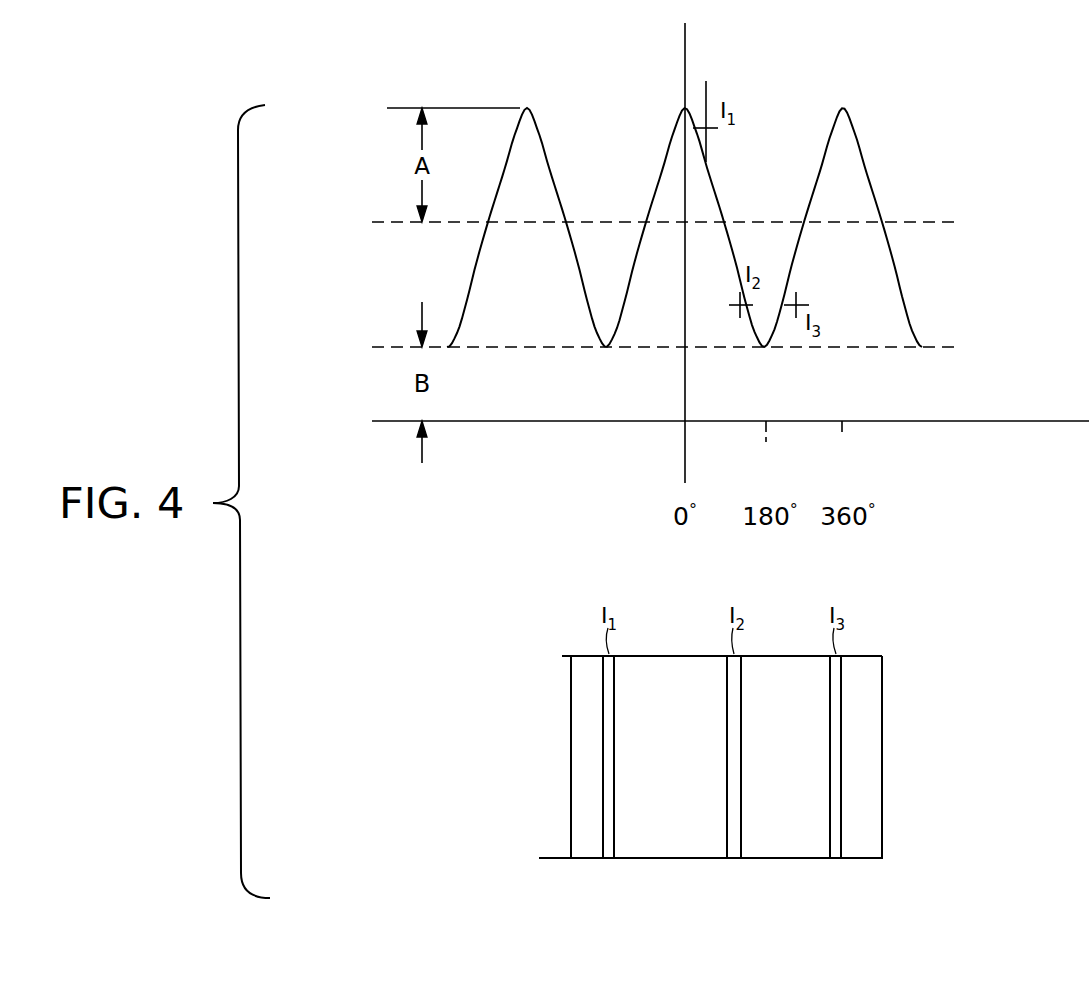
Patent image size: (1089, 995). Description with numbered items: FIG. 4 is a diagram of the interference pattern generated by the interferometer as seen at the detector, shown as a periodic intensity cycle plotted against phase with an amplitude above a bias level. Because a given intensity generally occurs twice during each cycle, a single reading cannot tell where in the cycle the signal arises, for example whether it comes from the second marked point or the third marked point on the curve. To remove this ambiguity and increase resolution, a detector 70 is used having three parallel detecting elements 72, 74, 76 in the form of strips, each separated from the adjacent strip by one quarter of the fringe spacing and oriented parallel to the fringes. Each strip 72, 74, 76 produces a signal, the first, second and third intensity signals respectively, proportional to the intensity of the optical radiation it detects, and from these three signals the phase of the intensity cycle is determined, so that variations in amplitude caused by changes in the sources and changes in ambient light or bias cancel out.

The detector 70 is at (916, 663).
The detecting element 72 is at (608, 861).
The detecting element 74 is at (732, 861).
The detecting element 76 is at (835, 861).